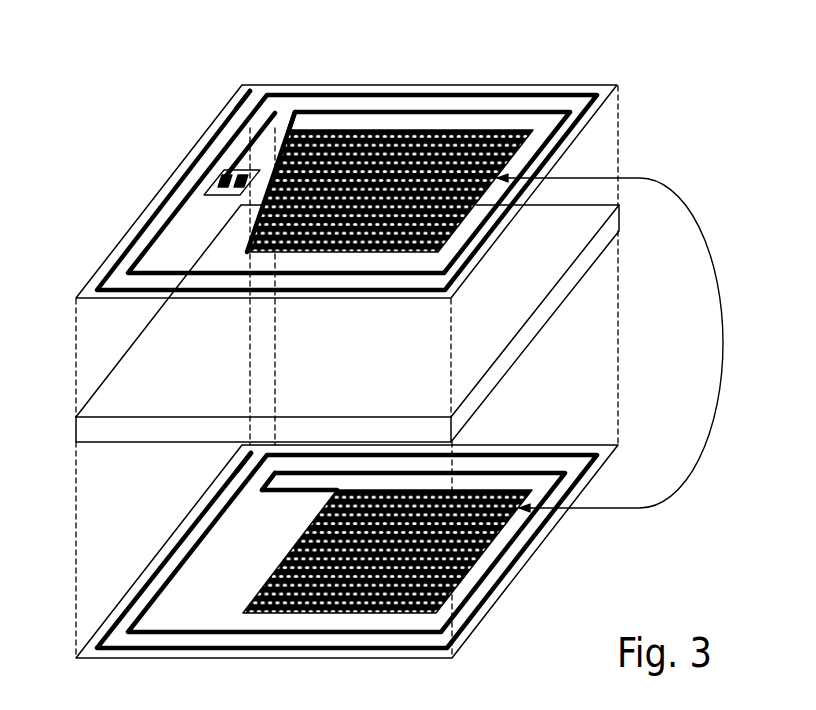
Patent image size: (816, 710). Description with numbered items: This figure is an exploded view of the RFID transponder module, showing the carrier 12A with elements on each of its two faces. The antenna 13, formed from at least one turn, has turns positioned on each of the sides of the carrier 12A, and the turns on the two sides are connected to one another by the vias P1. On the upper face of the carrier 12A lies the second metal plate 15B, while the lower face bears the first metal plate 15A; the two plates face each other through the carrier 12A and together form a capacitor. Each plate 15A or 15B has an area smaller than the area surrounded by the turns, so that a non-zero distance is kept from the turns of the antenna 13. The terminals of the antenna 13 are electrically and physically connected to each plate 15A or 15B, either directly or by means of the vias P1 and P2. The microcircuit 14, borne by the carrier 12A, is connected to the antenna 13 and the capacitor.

The carrier 12A is at (572, 276).
The antenna 13 is at (327, 640).
The microcircuit 14 is at (204, 195).
The first metal plate 15A is at (510, 527).
The second metal plate 15B is at (436, 130).
The via P1 is at (227, 220).
The via P2 is at (245, 243).